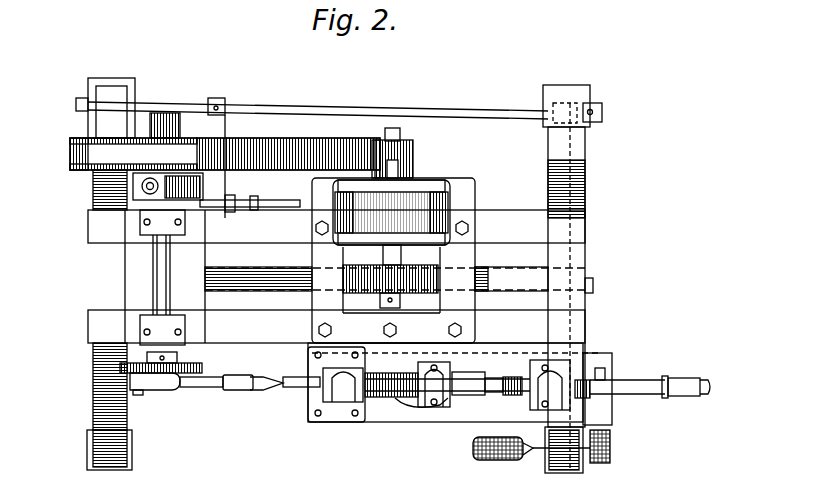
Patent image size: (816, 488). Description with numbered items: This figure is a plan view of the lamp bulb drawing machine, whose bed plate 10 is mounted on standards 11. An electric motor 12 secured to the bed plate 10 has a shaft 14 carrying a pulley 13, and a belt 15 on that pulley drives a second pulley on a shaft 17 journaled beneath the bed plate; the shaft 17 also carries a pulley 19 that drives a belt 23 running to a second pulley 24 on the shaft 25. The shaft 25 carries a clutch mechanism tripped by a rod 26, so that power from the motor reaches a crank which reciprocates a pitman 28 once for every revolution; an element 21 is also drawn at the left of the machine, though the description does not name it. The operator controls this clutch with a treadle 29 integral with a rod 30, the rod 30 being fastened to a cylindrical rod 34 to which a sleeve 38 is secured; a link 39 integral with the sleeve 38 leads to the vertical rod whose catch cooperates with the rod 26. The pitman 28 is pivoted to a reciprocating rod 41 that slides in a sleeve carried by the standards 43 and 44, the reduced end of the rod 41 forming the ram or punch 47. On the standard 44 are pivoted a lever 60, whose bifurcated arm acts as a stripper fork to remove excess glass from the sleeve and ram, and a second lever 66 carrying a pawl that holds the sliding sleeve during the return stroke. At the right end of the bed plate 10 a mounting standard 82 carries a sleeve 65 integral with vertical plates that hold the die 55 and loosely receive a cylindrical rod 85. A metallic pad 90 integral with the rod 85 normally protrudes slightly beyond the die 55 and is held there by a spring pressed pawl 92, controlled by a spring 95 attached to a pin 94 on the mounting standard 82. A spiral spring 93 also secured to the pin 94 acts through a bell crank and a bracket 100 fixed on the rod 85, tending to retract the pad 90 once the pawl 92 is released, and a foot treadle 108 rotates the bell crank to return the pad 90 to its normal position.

The machine bed plate 10 is at (515, 220).
The standards 11 is at (585, 165).
The electric motor 12 is at (440, 182).
The pulley 13 is at (450, 228).
The shaft 14 is at (400, 160).
The belt 15 is at (360, 265).
The shaft 17 is at (392, 128).
The pulley 19 is at (376, 142).
The shaft 21 is at (185, 390).
The belt 23 is at (306, 142).
The second pulley 24 is at (232, 142).
The shaft 25 is at (160, 270).
The rod 26 is at (215, 203).
The pitman 28 is at (240, 391).
The treadle 29 is at (473, 447).
The rod 30 is at (575, 262).
The cylindrical rod 34 is at (478, 108).
The sleeve 38 is at (214, 98).
The link 39 is at (228, 122).
The reciprocating rod 41 is at (292, 388).
The standard 43 is at (333, 403).
The standard 44 is at (425, 407).
The ram or punch 47 is at (480, 372).
The die 55 is at (505, 460).
The lever 60 is at (412, 372).
The sleeve 65 is at (652, 381).
The second lever 66 is at (410, 400).
The mounting standard 82 is at (512, 377).
The cylindrical rod 85 is at (688, 378).
The metallic pad 90 is at (500, 355).
The spring pressed pawl 92 is at (572, 398).
The spiral spring 93 is at (593, 386).
The pin 94 is at (603, 370).
The spring 95 is at (588, 360).
The bracket 100 is at (703, 395).
The foot treadle 108 is at (612, 445).